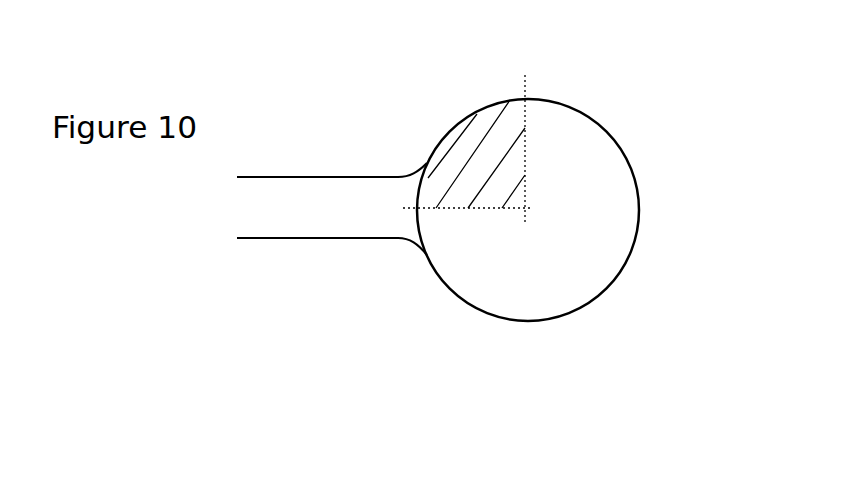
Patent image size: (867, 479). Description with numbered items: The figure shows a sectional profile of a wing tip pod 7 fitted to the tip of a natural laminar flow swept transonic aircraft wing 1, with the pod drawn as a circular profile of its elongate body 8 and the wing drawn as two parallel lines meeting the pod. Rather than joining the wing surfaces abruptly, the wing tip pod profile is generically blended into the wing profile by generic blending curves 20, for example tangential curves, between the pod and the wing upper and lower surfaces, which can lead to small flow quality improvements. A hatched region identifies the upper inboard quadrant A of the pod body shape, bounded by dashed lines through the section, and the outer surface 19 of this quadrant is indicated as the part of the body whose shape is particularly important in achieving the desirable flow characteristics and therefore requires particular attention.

The wing 1 is at (280, 162).
The generic blending curves 20 is at (410, 255).
The wing tip pod 7 is at (647, 198).
The elongate body 8 is at (615, 128).
The outer surface 19 is at (470, 108).
The upper inboard quadrant A is at (470, 152).